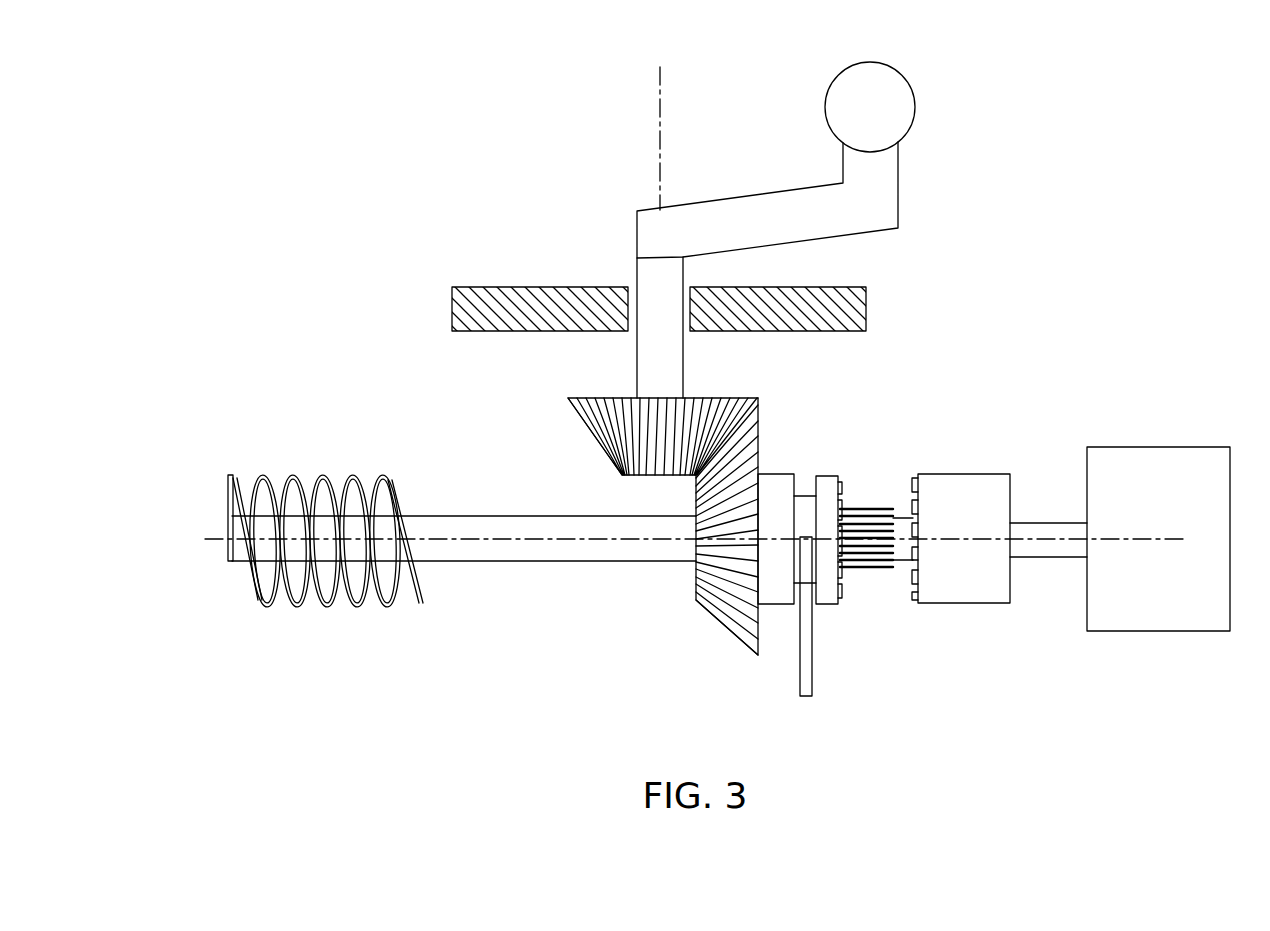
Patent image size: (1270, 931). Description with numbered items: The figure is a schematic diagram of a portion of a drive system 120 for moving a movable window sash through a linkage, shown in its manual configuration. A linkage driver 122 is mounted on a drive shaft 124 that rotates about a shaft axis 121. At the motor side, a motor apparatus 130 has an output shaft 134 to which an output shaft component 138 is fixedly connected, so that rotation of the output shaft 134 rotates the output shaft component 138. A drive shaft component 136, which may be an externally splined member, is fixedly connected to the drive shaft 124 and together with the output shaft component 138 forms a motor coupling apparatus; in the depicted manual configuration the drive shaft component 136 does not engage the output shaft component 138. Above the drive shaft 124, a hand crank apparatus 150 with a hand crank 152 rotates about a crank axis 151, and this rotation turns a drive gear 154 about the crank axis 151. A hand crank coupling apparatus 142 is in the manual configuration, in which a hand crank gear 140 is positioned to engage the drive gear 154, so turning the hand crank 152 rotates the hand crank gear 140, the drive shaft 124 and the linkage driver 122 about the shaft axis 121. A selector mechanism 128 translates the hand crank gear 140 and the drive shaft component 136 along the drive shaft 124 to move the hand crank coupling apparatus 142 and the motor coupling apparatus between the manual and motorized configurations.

The drive system 120 is at (1105, 150).
The shaft axis 121 is at (207, 543).
The linkage driver 122 is at (320, 622).
The drive shaft 124 is at (498, 560).
The selector mechanism 128 is at (808, 703).
The motor apparatus 130 is at (1230, 643).
The output shaft 134 is at (1053, 560).
The drive shaft component 136 is at (860, 510).
The output shaft component 138 is at (960, 474).
The hand crank gear 140 is at (725, 632).
The hand crank coupling apparatus 142 is at (783, 610).
The hand crank apparatus 150 is at (592, 162).
The crank axis 151 is at (663, 145).
The hand crank 152 is at (900, 188).
The drive gear 154 is at (590, 433).